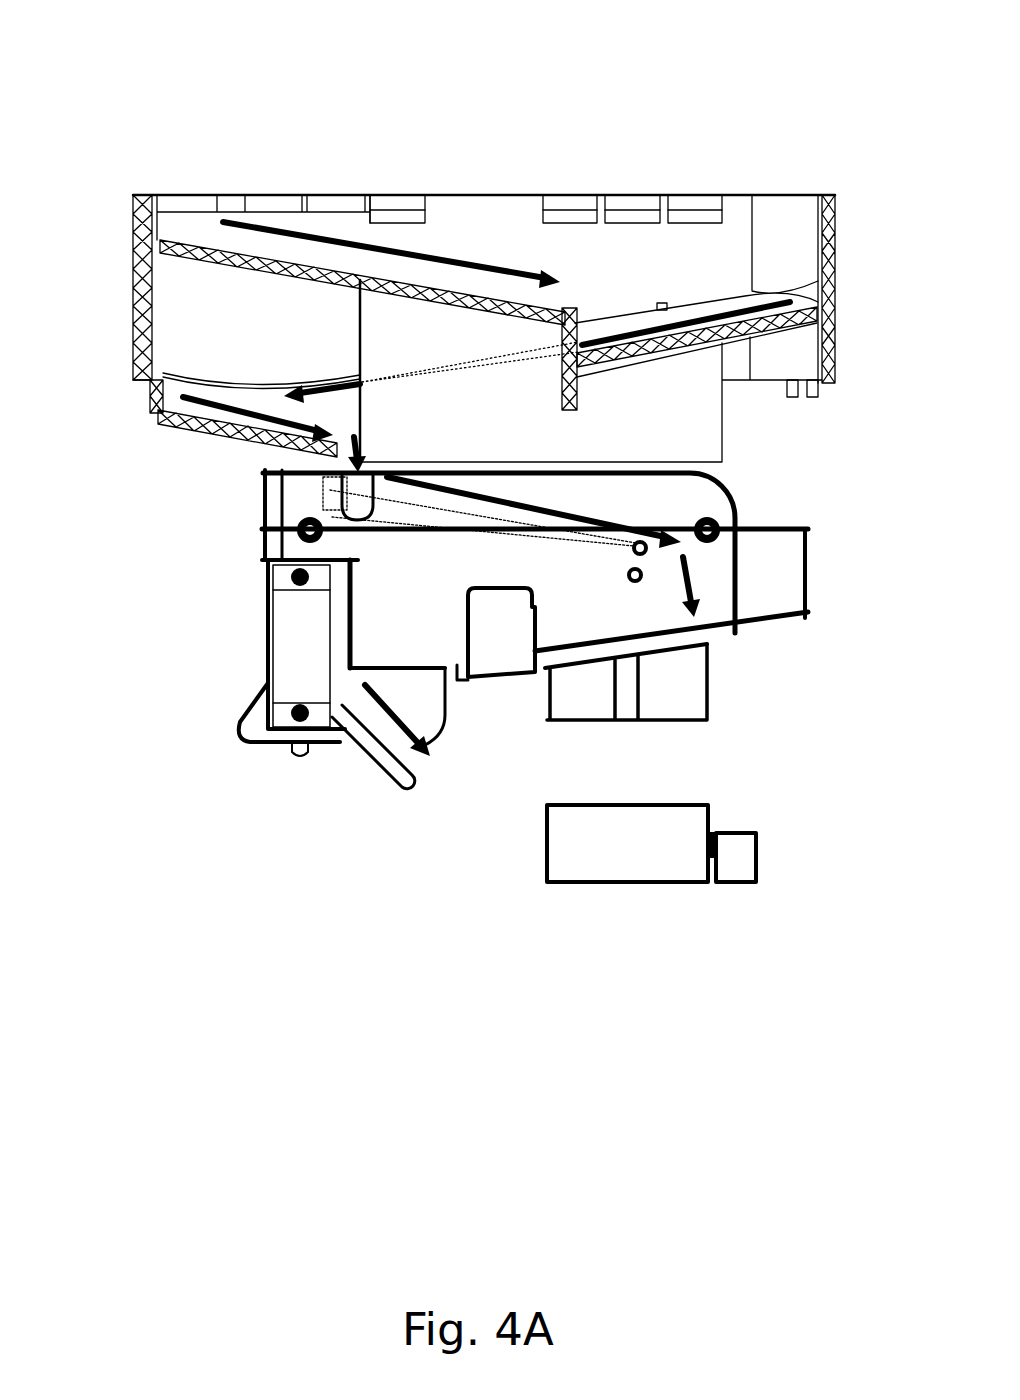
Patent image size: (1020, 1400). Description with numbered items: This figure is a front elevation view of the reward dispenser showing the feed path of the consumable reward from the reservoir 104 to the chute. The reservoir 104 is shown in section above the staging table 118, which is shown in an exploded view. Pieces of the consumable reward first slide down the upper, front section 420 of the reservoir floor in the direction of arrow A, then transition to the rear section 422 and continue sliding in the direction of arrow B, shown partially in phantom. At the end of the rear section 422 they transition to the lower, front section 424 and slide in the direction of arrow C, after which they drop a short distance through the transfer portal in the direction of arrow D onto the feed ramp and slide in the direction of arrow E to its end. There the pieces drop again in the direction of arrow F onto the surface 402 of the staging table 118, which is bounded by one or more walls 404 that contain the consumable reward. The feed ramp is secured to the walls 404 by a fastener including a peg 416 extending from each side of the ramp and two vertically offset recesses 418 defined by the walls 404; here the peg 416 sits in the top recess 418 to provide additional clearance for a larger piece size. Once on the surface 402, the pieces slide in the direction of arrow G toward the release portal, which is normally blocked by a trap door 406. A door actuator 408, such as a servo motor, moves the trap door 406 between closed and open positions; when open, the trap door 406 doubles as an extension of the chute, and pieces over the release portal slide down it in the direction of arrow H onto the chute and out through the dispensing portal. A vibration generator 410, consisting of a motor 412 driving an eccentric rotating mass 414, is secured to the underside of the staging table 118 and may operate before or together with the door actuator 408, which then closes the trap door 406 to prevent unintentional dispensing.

The reservoir 104 is at (138, 327).
The upper, front section of the floor 420 is at (190, 238).
The rear section of the floor 422 is at (823, 278).
The lower, front section of the floor 424 is at (183, 427).
The staging table 118 is at (312, 487).
The walls 404 is at (313, 547).
The door actuator 408 is at (293, 652).
The trap door 406 is at (367, 753).
The surface 402 is at (773, 635).
The peg 416 is at (743, 527).
The recesses 418 is at (742, 528).
The vibration generator 410 is at (705, 872).
The motor 412 is at (607, 867).
The eccentric rotating mass 414 is at (735, 865).
The arrow A is at (455, 250).
The arrow B is at (753, 290).
The arrow C is at (240, 407).
The arrow D is at (330, 478).
The arrow E is at (717, 490).
The arrow F is at (735, 583).
The arrow G is at (505, 642).
The arrow H is at (407, 742).